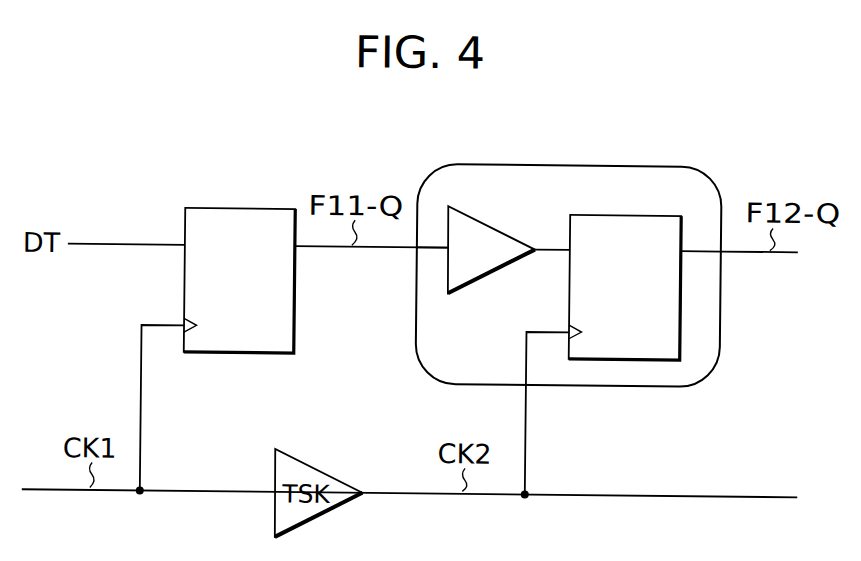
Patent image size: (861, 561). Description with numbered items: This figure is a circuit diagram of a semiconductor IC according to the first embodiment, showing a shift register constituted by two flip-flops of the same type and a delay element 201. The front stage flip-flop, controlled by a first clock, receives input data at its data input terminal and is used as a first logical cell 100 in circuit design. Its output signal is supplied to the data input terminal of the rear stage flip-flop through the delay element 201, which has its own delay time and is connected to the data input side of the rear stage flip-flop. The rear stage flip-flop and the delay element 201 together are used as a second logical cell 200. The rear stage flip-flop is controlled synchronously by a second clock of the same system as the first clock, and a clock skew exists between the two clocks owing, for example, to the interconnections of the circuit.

The first logical cell 100 is at (226, 210).
The second logical cell 200 is at (550, 163).
The delay element 201 is at (486, 288).